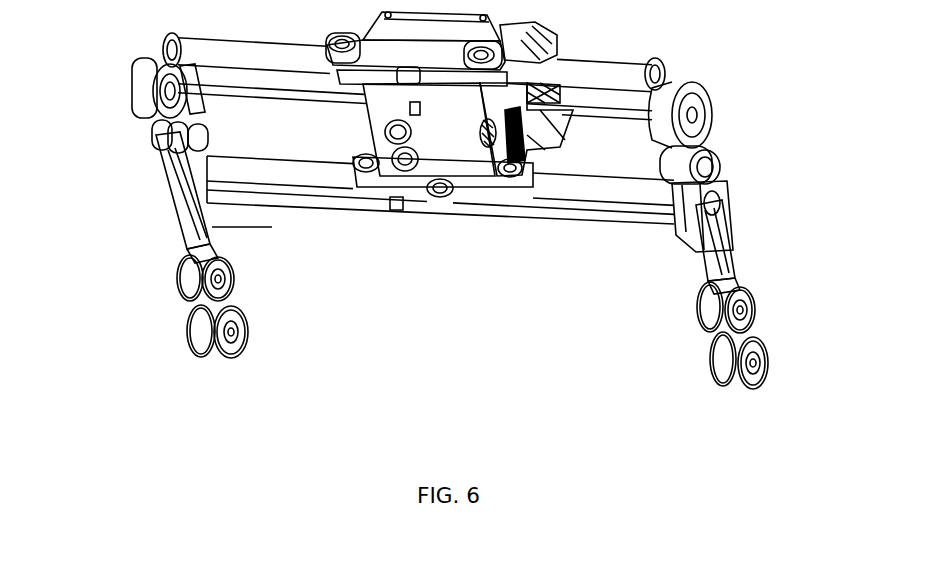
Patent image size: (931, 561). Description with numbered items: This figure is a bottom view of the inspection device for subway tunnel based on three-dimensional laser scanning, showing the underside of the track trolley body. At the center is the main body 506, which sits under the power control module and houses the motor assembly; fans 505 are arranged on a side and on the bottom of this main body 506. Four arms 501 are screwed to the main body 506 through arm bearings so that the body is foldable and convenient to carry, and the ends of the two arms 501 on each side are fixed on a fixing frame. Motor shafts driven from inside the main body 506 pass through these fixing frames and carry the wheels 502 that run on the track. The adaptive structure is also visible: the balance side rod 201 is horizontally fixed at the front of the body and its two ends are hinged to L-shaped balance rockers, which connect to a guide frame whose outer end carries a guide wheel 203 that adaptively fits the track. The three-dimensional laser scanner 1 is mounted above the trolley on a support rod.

The three-dimensional laser scanner 1 is at (537, 45).
The balance side rod 201 is at (573, 222).
The guide wheel 203 is at (757, 298).
The arm 501 is at (318, 176).
The wheel 502 is at (142, 93).
The fan 505 is at (412, 213).
The main body 506 is at (477, 215).